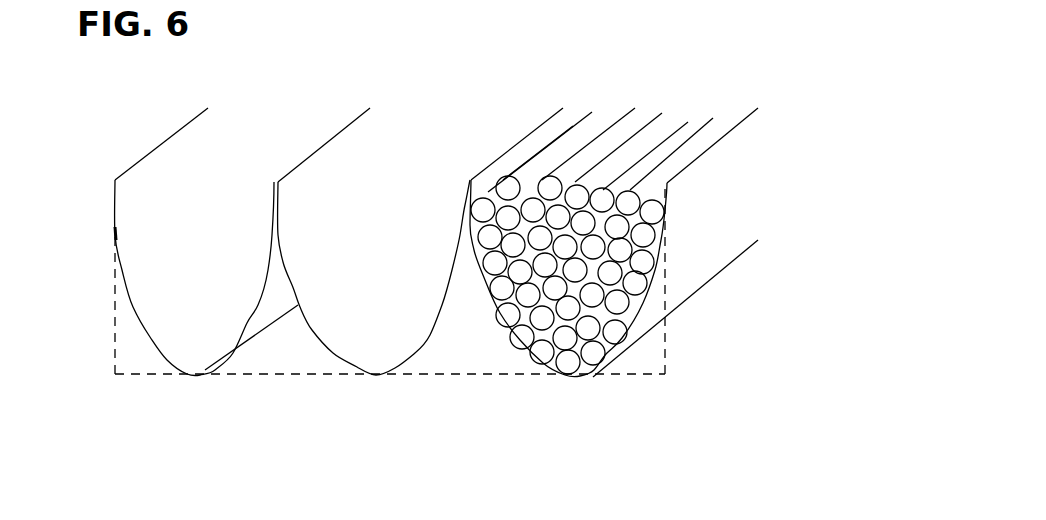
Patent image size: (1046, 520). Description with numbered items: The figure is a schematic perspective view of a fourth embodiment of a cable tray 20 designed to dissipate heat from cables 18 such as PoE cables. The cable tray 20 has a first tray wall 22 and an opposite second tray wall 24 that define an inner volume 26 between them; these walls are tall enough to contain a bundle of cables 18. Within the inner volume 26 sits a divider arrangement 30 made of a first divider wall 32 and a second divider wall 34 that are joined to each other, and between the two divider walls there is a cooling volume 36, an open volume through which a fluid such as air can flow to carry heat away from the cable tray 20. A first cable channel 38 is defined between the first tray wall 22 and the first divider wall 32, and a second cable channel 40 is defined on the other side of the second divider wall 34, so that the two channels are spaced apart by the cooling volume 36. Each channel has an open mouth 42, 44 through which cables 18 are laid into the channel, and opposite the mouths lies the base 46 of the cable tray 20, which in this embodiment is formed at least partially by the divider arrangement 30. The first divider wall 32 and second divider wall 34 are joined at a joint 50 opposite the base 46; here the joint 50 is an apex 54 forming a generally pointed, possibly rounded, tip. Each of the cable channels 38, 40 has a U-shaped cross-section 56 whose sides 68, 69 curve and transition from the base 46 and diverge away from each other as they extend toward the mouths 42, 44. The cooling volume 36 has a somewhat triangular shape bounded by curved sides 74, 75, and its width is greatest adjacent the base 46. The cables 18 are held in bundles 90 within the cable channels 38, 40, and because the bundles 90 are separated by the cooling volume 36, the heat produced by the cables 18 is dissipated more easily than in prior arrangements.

The cables 18 is at (597, 142).
The cable tray 20 is at (858, 108).
The first tray wall 22 is at (112, 236).
The second tray wall 24 is at (717, 253).
The inner volume 26 is at (142, 171).
The divider arrangement 30 is at (273, 215).
The first divider wall 32 is at (262, 292).
The second divider wall 34 is at (476, 232).
The cooling volume 36 is at (280, 340).
The first cable channel 38 is at (122, 282).
The second cable channel 40 is at (343, 367).
The open mouth 42 is at (196, 128).
The open mouth 44 is at (342, 130).
The base 46 is at (378, 375).
The joint 50 is at (296, 163).
The apex 54 is at (327, 140).
The U-shaped cross-section 56 is at (421, 125).
The side 68 is at (118, 237).
The side 69 is at (272, 243).
The curved side 74 is at (258, 307).
The curved side 75 is at (306, 322).
The bundles 90 is at (604, 346).